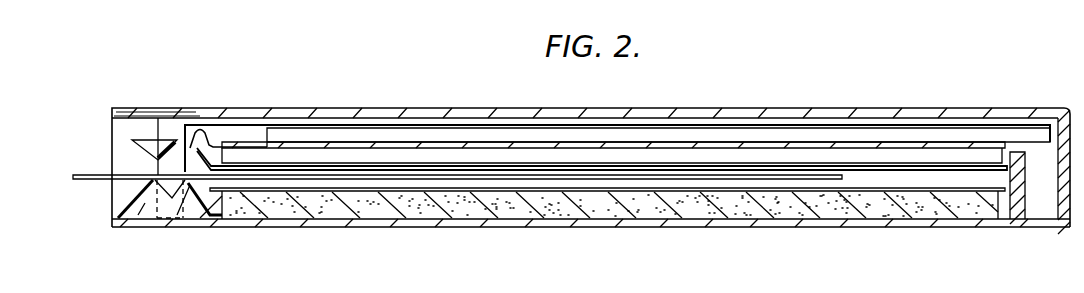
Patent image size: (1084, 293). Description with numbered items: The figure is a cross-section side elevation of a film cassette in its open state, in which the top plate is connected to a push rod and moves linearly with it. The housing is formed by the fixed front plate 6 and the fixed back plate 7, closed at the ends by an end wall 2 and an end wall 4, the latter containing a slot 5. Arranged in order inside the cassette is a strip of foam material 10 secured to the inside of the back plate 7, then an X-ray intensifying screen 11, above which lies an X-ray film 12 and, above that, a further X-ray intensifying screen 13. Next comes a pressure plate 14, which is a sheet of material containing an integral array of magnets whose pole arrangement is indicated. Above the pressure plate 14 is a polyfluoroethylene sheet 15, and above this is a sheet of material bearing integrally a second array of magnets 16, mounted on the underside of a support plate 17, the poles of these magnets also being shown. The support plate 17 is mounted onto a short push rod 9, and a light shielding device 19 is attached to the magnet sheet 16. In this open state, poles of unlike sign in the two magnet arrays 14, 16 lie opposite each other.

The end wall 2 is at (1058, 183).
The end wall 4 is at (145, 203).
The slot 5 is at (148, 165).
The fixed front plate 6 is at (727, 117).
The fixed back plate 7 is at (506, 228).
The push rod 9 is at (160, 133).
The strip of foam material 10 is at (630, 213).
The X-ray intensifying screen 11 is at (713, 191).
The X-ray film 12 is at (105, 180).
The X-ray intensifying screen 13 is at (908, 166).
The pressure plate 14 is at (493, 152).
The polyfluoroethylene sheet 15 is at (590, 142).
The sheet of material bearing an array of magnets 16 is at (363, 128).
The support plate 17 is at (297, 120).
The light shielding device 19 is at (213, 128).